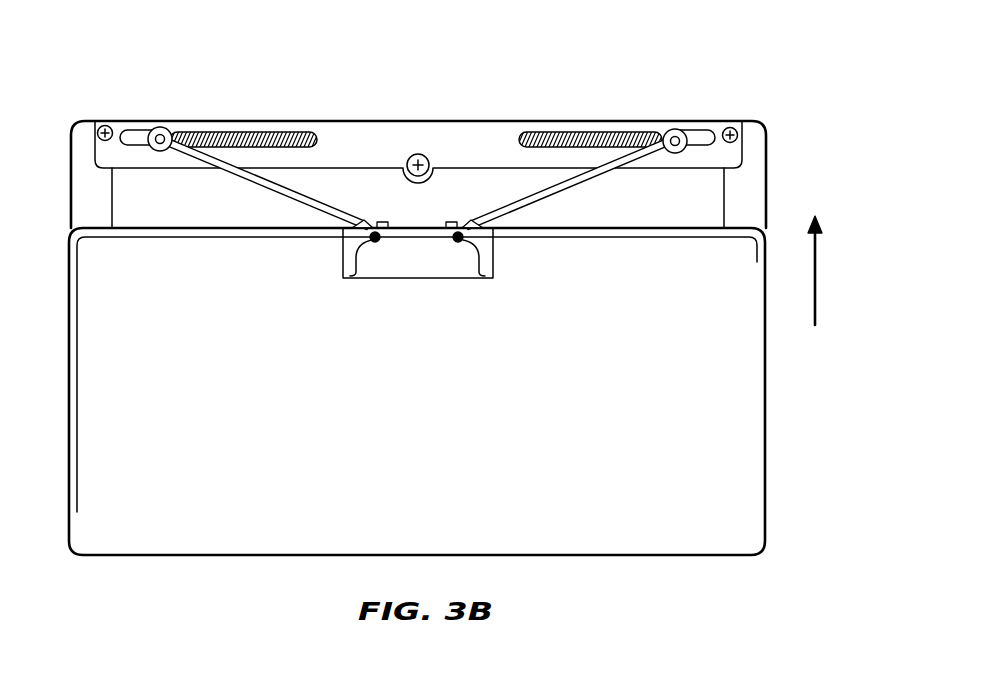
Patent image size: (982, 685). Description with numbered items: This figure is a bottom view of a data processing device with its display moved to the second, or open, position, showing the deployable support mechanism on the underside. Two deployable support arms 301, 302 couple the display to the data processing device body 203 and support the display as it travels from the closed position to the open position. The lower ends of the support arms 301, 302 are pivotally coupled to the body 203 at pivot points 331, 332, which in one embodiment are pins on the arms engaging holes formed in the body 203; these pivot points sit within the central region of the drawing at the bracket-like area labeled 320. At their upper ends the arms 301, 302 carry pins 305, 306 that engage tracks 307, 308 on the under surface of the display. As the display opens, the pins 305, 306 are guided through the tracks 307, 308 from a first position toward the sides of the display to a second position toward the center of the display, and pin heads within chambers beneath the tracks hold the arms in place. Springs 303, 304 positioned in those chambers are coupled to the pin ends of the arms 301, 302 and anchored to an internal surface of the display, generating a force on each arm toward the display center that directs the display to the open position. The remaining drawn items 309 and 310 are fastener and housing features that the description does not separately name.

The data processing device body 203 is at (737, 430).
The deployable support arm 301 is at (252, 184).
The deployable support arm 302 is at (566, 183).
The spring 303 is at (287, 131).
The spring 304 is at (537, 131).
The pin 305 is at (168, 126).
The pin 306 is at (678, 128).
The track 307 is at (138, 128).
The track 308 is at (700, 128).
The screws 309 is at (112, 121).
The hinge housing / rail 310 is at (425, 121).
The bracket 320 is at (415, 263).
The pivot point 331 is at (342, 280).
The pivot point 332 is at (484, 280).